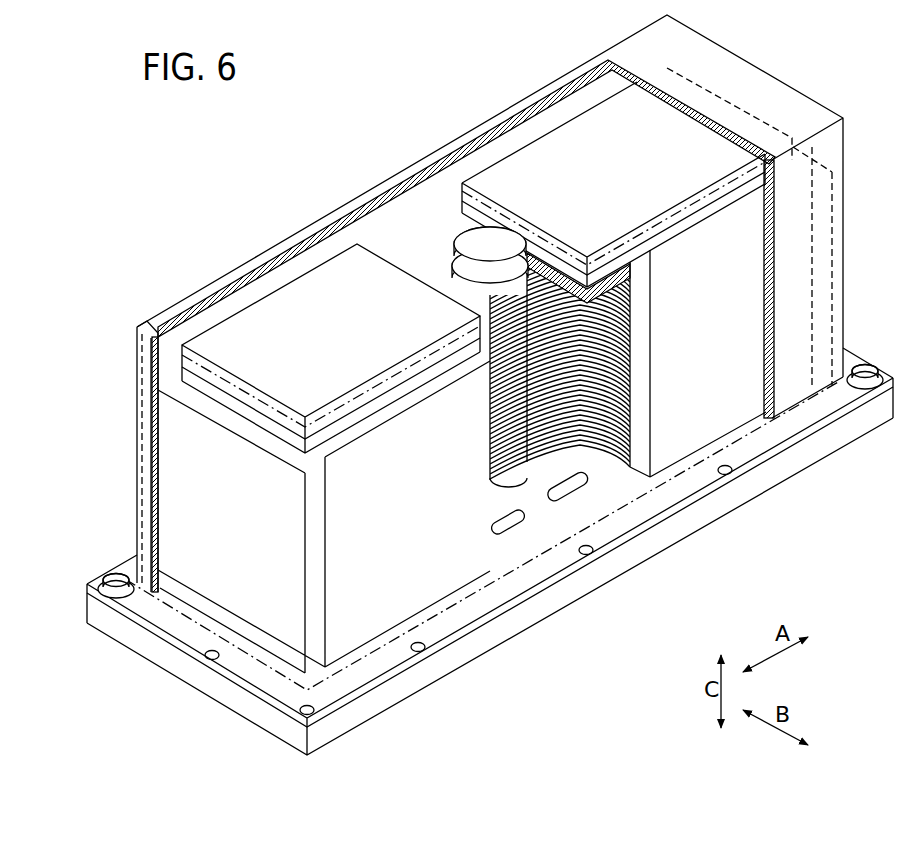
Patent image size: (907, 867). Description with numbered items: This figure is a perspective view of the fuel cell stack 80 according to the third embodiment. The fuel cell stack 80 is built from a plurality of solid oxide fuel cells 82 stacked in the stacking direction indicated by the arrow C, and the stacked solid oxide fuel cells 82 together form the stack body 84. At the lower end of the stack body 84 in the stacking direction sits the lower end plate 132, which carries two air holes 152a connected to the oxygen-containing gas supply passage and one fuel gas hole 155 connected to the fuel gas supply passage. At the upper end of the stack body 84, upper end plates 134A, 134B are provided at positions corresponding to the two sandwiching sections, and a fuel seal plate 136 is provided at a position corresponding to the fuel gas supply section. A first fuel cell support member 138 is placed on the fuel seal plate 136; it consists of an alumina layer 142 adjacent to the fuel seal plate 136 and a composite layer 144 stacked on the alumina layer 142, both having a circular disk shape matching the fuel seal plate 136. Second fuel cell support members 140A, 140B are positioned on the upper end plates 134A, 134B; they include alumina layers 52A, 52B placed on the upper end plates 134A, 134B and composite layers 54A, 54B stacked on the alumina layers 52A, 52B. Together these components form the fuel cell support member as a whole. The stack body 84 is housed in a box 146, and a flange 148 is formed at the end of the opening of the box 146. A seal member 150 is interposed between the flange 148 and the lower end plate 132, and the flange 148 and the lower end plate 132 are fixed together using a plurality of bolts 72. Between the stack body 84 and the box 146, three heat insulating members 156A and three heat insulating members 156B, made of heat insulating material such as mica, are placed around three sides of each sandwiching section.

The fuel cell stack 80 is at (182, 204).
The lower end plate 132 is at (614, 579).
The seal member 150 is at (781, 457).
The flange 148 is at (828, 403).
The heat insulating members 156A is at (723, 482).
The heat insulating members 156B is at (437, 578).
The air holes 152a is at (567, 497).
The bolts 72 is at (868, 363).
The box 146 is at (716, 63).
The second fuel cell support member 140A is at (553, 165).
The second fuel cell support member 140B is at (323, 285).
The composite layer 54A is at (657, 218).
The alumina layer 52A is at (693, 222).
The composite layer 54B is at (230, 378).
The alumina layer 52B is at (233, 402).
The upper end plate 134A is at (625, 275).
The upper end plate 134B is at (413, 390).
The fuel seal plate 136 is at (547, 268).
The first fuel cell support member 138 is at (460, 225).
The alumina layer 142 is at (468, 280).
The composite layer 144 is at (466, 250).
The fuel gas hole 155 is at (490, 483).
The solid oxide fuel cells 82 is at (635, 345).
The stack body 84 is at (616, 367).